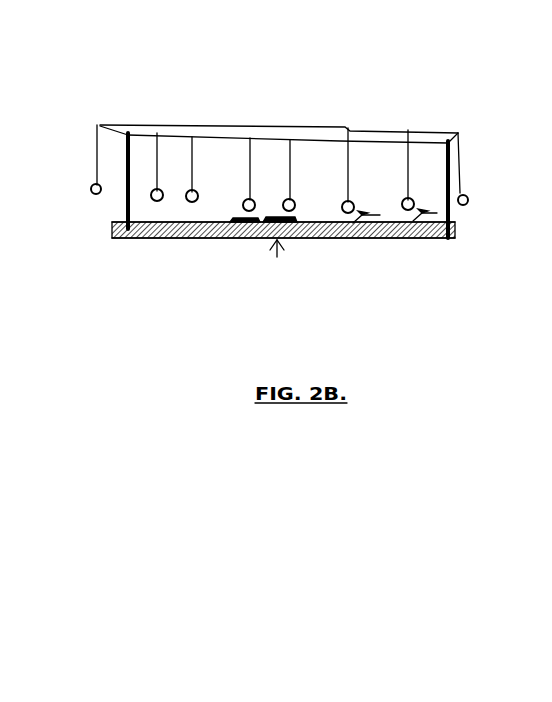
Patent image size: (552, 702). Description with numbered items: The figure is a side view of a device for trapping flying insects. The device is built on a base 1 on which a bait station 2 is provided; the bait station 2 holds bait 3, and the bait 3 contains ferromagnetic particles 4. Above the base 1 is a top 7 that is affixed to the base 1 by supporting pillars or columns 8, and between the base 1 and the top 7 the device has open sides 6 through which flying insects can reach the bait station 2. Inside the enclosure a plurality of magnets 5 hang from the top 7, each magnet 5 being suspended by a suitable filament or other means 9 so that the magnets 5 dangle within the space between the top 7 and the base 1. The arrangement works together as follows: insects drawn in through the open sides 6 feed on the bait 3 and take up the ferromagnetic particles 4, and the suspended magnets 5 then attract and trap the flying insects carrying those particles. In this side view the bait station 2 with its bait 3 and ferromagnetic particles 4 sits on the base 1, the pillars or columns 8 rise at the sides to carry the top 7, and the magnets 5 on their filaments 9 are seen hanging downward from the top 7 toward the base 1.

The base 1 is at (195, 240).
The bait station 2 is at (283, 243).
The bait 3 is at (268, 243).
The ferromagnetic particles 4 is at (310, 243).
The magnets 5 is at (397, 242).
The open sides 6 is at (114, 211).
The top 7 is at (98, 127).
The supporting pillars or columns 8 is at (460, 177).
The filament or other means 9 is at (198, 168).